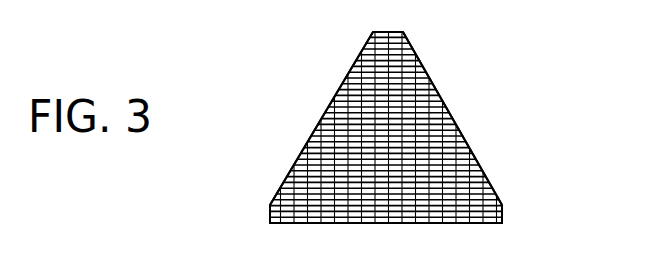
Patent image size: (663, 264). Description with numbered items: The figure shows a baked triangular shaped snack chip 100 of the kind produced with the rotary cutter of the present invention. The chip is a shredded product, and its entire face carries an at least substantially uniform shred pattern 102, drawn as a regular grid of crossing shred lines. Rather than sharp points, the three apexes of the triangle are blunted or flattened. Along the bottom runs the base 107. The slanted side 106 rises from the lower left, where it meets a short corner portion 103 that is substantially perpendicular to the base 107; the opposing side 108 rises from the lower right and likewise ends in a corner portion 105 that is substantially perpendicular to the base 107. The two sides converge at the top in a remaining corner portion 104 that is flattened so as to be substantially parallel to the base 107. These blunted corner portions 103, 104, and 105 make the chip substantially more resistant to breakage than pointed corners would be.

The baked triangular shaped snack chip 100 is at (314, 75).
The shred pattern 102 is at (337, 133).
The corner portion 103 is at (268, 217).
The corner portion 104 is at (388, 31).
The corner portion 105 is at (503, 216).
The side 106 is at (297, 160).
The base 107 is at (420, 224).
The opposing side 108 is at (452, 117).